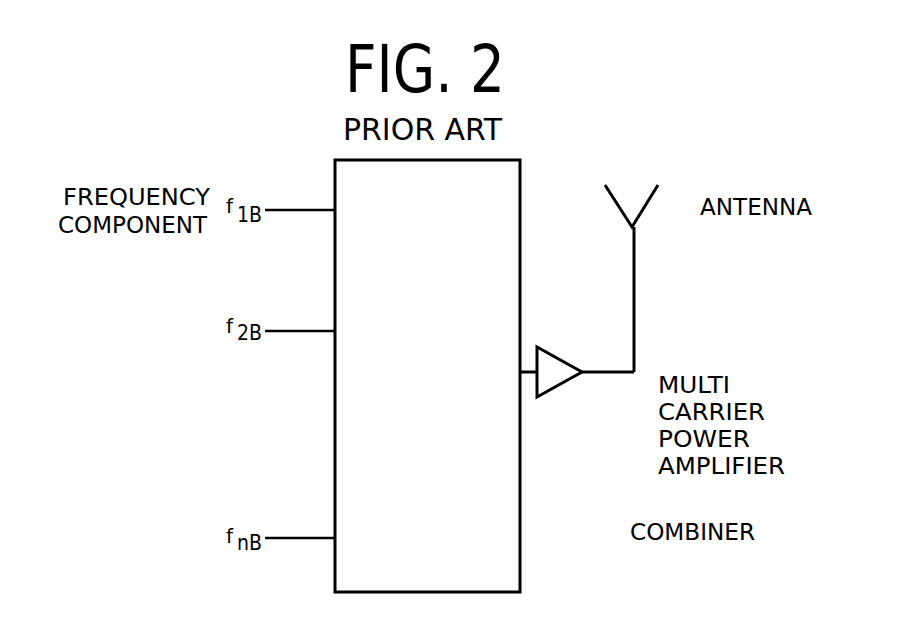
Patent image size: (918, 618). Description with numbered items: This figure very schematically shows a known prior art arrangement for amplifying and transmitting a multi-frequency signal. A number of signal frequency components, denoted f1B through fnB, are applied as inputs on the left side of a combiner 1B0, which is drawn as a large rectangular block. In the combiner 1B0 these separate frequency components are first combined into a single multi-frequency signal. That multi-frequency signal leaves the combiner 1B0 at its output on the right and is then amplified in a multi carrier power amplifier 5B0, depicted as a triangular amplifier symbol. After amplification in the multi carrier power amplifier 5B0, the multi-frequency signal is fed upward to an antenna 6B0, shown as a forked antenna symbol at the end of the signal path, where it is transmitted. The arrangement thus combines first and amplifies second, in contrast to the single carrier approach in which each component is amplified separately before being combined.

The combiner 1B0 is at (520, 493).
The multi carrier power amplifier 5B0 is at (553, 388).
The antenna 6B0 is at (657, 208).